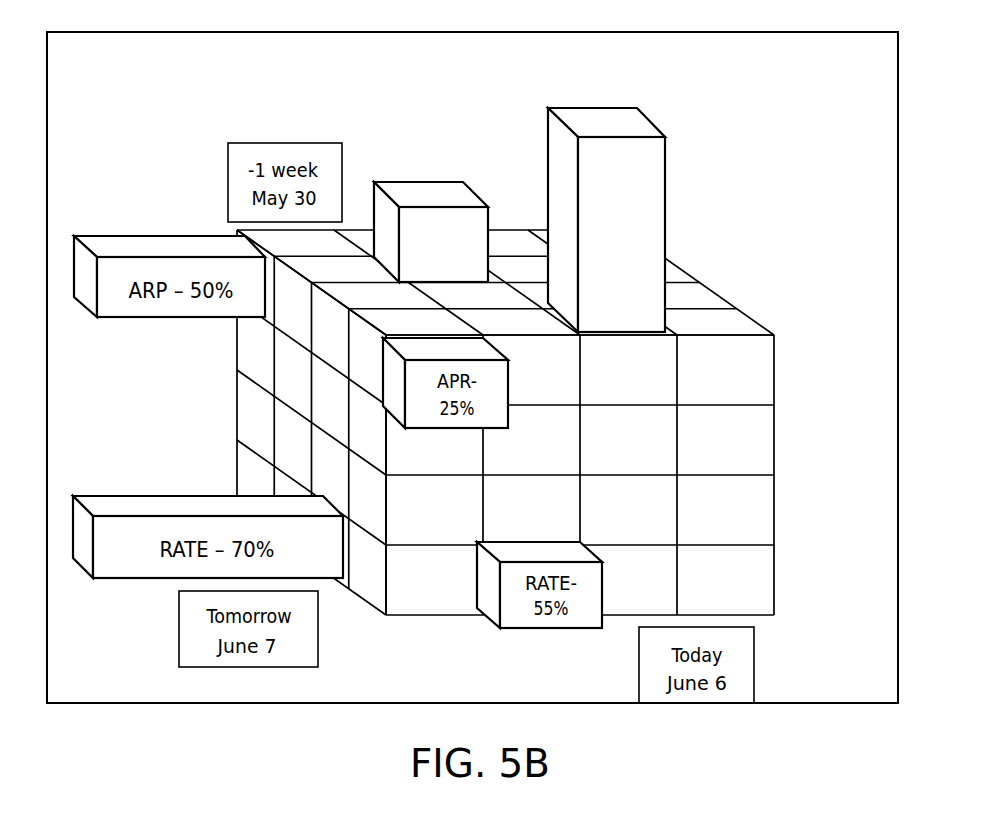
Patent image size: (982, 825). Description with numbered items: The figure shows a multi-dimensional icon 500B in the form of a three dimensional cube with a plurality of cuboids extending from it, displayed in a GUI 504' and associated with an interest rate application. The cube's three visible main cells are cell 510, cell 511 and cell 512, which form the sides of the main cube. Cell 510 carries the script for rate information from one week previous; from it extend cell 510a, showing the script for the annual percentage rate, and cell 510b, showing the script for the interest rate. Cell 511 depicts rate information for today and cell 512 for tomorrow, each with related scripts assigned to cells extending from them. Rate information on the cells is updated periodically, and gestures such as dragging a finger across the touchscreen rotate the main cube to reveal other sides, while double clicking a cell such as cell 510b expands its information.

The multi-dimensional icon 500B is at (498, 368).
The GUI 504' is at (460, 391).
The cell 510 is at (513, 235).
The cell 510a is at (435, 188).
The cell 510b is at (627, 117).
The cell 511 is at (732, 448).
The cell 512 is at (248, 392).